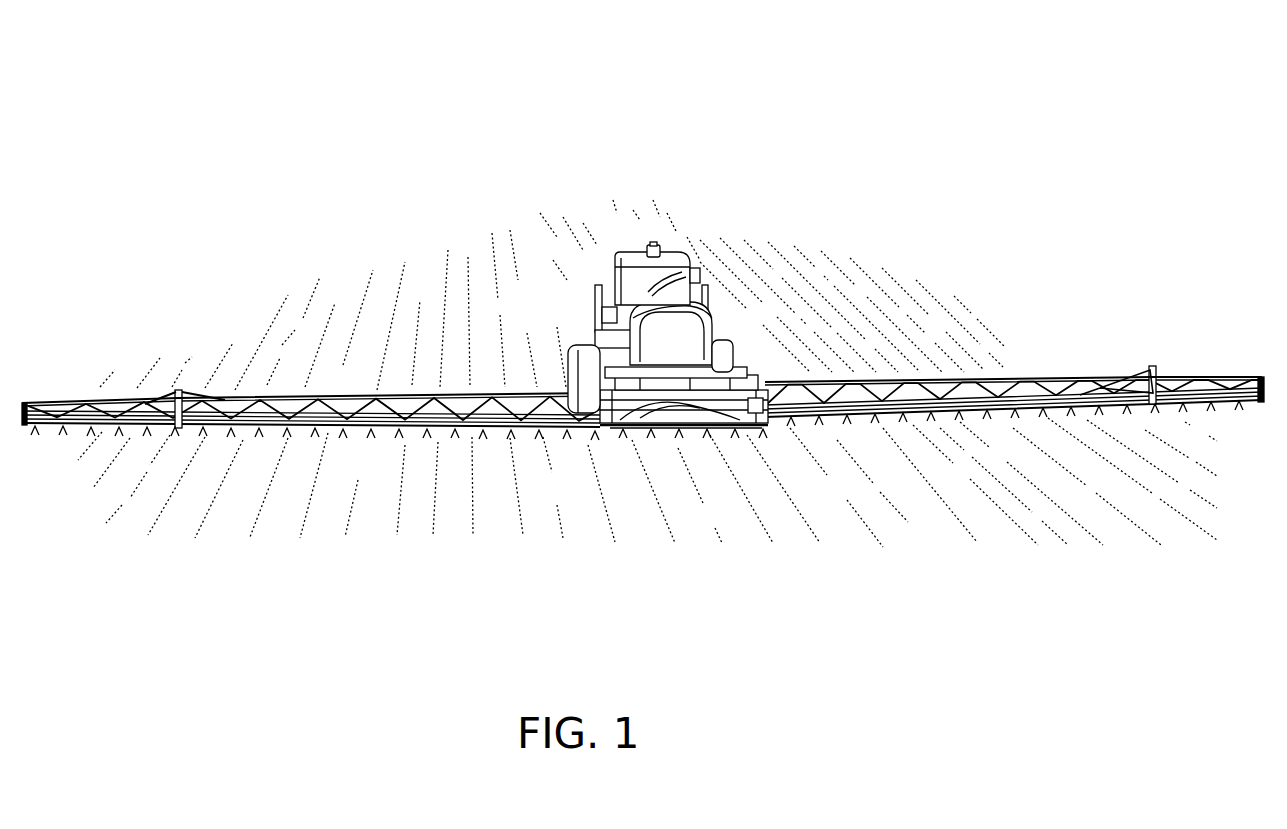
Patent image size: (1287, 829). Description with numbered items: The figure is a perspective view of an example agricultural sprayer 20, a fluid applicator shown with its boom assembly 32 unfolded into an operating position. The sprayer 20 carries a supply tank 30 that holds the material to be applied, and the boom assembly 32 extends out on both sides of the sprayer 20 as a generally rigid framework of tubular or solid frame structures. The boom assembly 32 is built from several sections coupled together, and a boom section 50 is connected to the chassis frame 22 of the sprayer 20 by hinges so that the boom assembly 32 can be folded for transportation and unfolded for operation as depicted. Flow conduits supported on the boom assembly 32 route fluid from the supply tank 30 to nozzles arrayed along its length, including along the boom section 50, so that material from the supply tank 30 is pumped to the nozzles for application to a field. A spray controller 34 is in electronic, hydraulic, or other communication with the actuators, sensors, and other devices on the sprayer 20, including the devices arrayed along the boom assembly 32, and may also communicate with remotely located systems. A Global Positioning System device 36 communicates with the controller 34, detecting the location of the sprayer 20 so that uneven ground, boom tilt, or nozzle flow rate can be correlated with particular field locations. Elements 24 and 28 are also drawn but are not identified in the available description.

The sprayer 20 is at (169, 118).
The chassis frame 22 is at (576, 314).
The tank 24 is at (561, 340).
The engine hood 28 is at (667, 301).
The supply tank 30 is at (702, 338).
The boom assembly 32 is at (963, 355).
The spray controller 34 is at (605, 318).
The Global Positioning System (GPS) device 36 is at (651, 243).
The boom section 50 is at (420, 392).